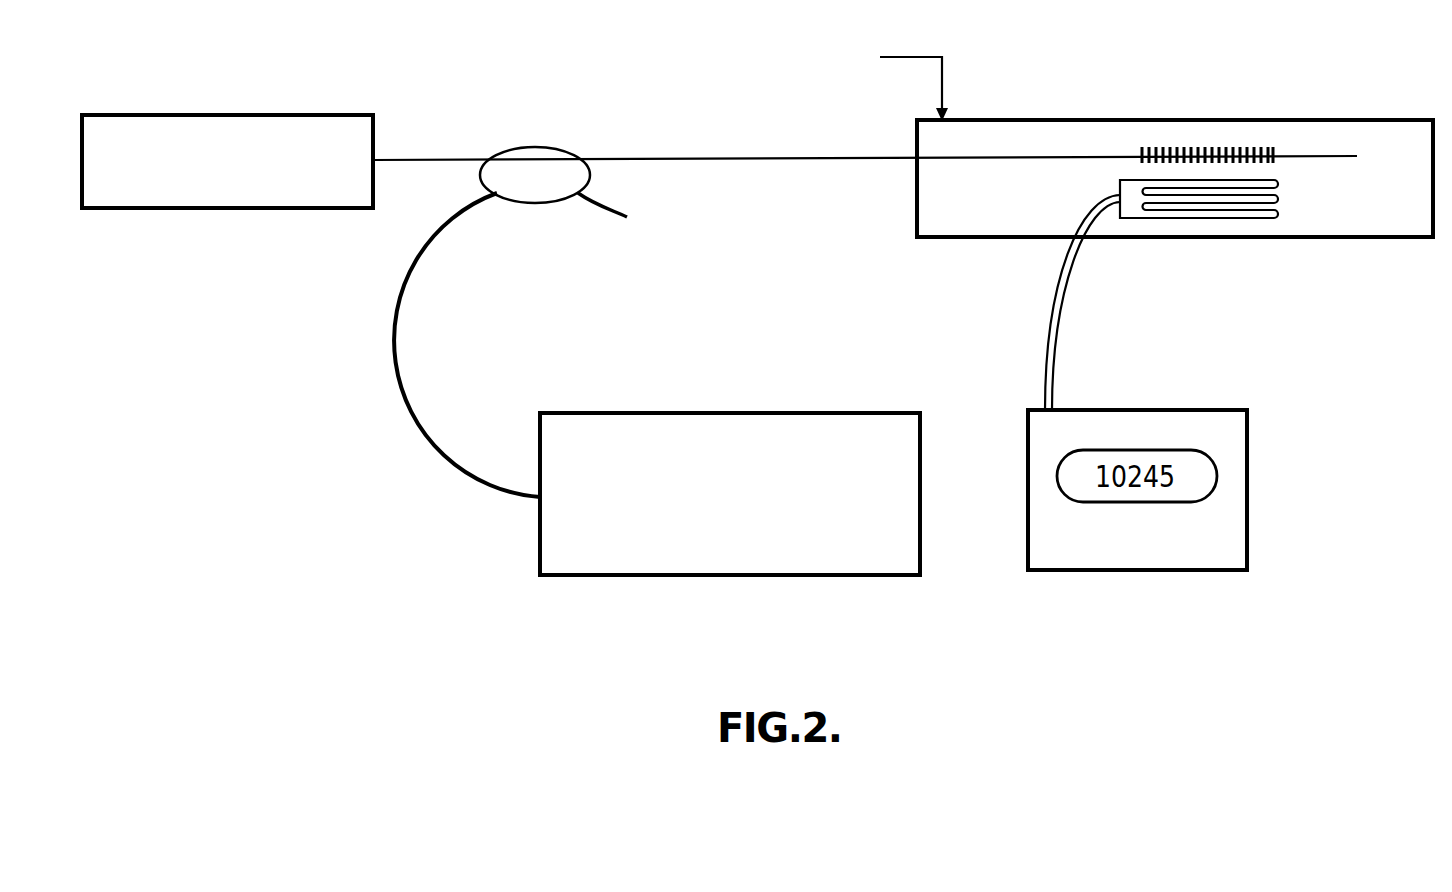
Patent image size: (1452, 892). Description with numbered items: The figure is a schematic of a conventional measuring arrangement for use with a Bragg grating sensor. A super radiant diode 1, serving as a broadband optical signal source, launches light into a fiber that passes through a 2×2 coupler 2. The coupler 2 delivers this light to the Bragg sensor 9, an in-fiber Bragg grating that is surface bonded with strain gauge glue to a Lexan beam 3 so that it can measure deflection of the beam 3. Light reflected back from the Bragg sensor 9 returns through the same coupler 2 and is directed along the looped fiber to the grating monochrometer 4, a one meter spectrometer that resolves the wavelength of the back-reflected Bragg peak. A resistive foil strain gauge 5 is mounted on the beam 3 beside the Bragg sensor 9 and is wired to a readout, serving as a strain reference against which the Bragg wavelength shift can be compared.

The super radiant diode 1 is at (322, 195).
The 2×2 coupler 2 is at (575, 175).
The Lexan beam 3 is at (982, 222).
The grating monochrometer 4 is at (768, 558).
The resistive foil strain gauge 5 is at (1270, 218).
The Bragg sensor 9 is at (1270, 141).